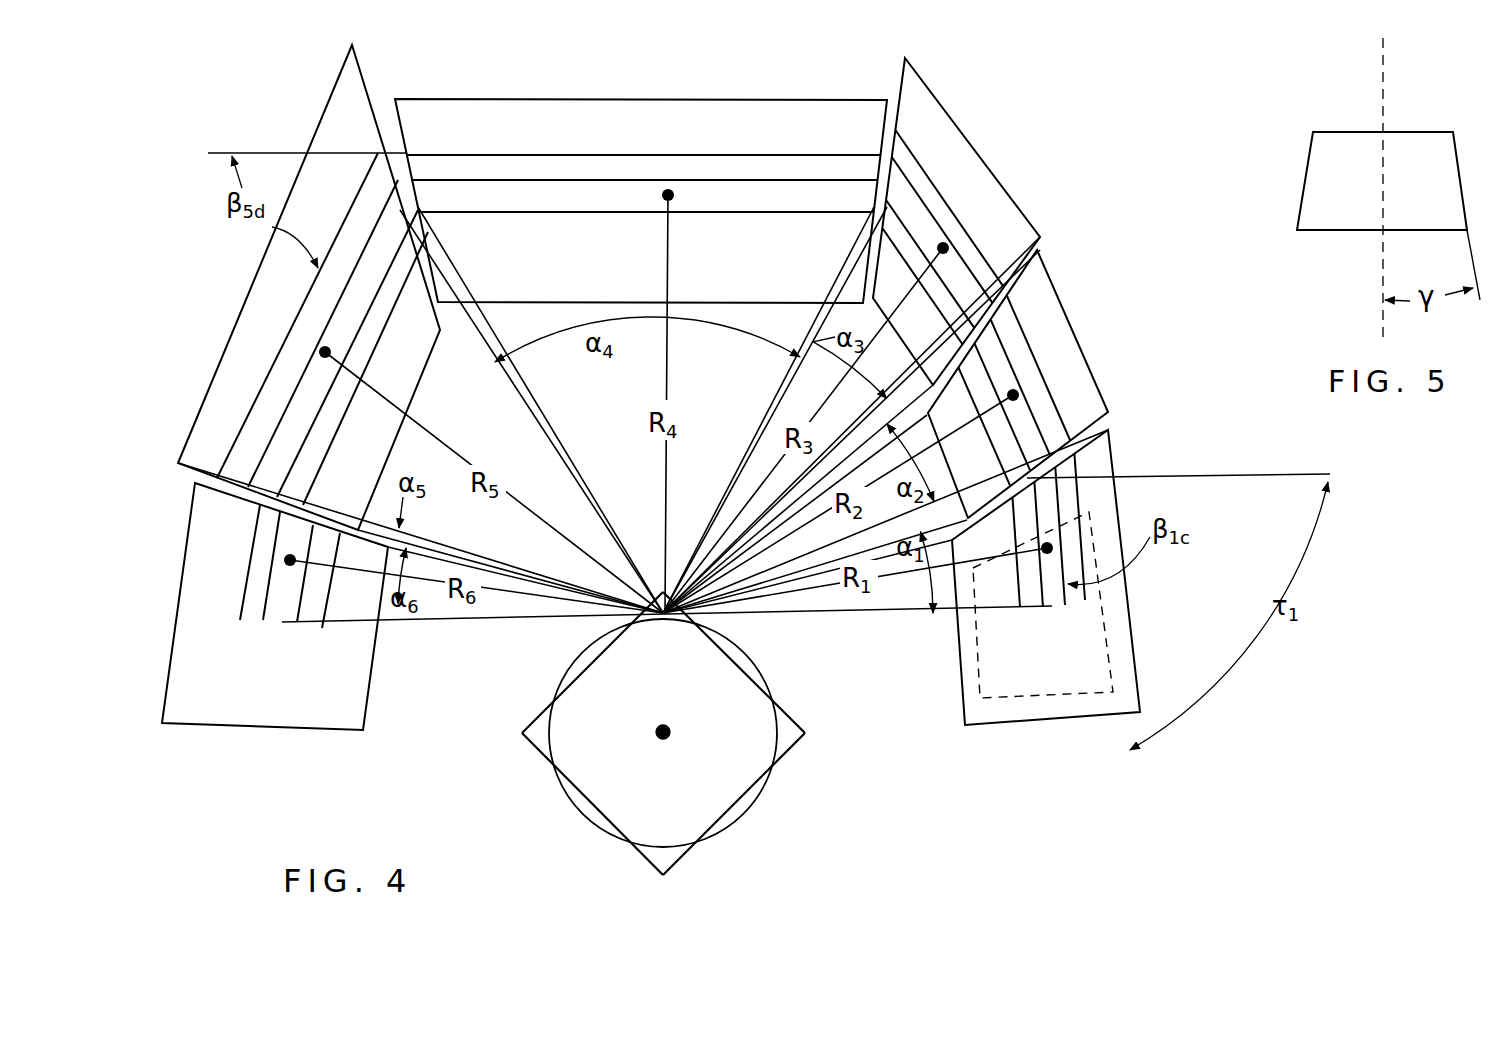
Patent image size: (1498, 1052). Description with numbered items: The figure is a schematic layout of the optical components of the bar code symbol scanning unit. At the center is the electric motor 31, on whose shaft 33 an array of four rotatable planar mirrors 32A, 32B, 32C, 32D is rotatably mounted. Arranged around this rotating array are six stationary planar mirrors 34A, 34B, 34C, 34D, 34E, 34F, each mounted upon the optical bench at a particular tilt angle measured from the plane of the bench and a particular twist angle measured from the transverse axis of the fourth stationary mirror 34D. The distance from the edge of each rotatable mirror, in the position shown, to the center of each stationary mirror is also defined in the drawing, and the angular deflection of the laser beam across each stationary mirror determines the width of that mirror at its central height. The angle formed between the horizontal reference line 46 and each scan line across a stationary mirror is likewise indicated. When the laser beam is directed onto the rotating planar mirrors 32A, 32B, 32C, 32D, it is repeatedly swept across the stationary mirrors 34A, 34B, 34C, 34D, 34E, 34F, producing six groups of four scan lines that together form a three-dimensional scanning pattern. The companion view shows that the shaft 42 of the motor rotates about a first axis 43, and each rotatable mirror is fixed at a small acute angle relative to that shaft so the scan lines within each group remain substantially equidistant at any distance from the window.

In FIG. 4, the electric motor 31 is at (730, 825).
In FIG. 4, the rotatable planar mirror 32A is at (752, 662).
In FIG. 4, the rotatable planar mirror 32B is at (752, 805).
In FIG. 4, the rotatable planar mirror 32C is at (588, 812).
In FIG. 4, the rotatable planar mirror 32D is at (570, 658).
In FIG. 4, the shaft of the electric motor 33 is at (672, 732).
In FIG. 4, the first stationary planar mirror 34A is at (1045, 728).
In FIG. 4, the second stationary planar mirror 34B is at (1083, 326).
In FIG. 4, the third stationary planar mirror 34C is at (967, 140).
In FIG. 4, the fourth stationary planar mirror 34D is at (748, 97).
In FIG. 4, the fifth stationary planar mirror 34E is at (215, 345).
In FIG. 4, the sixth stationary planar mirror 34F is at (190, 566).
In FIG. 4, the horizontal reference line 46 is at (1212, 477).
In FIG. 5, the shaft 42 is at (1405, 130).
In FIG. 5, the first axis 43 is at (1380, 252).